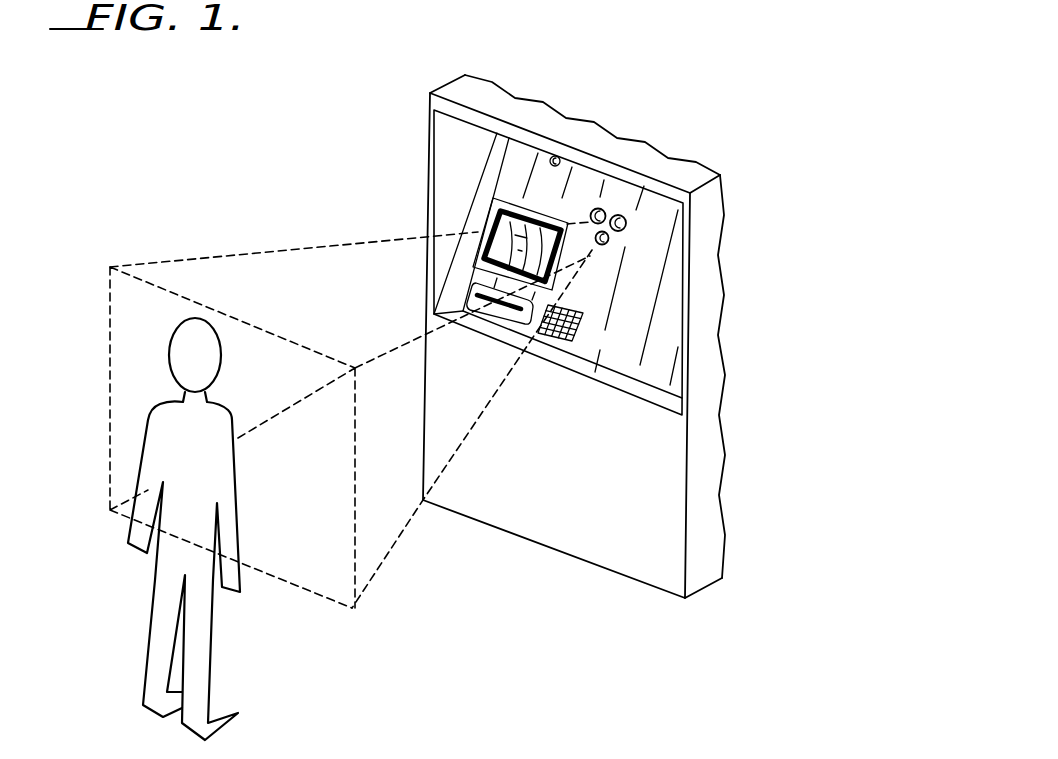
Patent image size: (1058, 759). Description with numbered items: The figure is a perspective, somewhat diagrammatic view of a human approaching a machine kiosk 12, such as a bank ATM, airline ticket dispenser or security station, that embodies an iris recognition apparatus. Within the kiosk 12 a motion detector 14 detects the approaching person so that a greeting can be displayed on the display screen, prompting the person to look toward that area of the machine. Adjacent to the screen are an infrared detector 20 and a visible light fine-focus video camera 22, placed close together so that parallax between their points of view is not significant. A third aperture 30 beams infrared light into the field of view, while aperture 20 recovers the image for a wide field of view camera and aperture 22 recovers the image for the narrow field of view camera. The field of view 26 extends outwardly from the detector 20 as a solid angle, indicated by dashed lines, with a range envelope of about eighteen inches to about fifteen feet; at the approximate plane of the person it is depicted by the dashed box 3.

The dashed box 3 is at (355, 468).
The machine kiosk 12 is at (705, 320).
The motion detector 14 is at (561, 159).
The infrared detector 20 is at (627, 222).
The visible light fine-focus video camera 22 is at (606, 212).
The field of view 26 is at (388, 552).
The aperture 30 is at (609, 238).